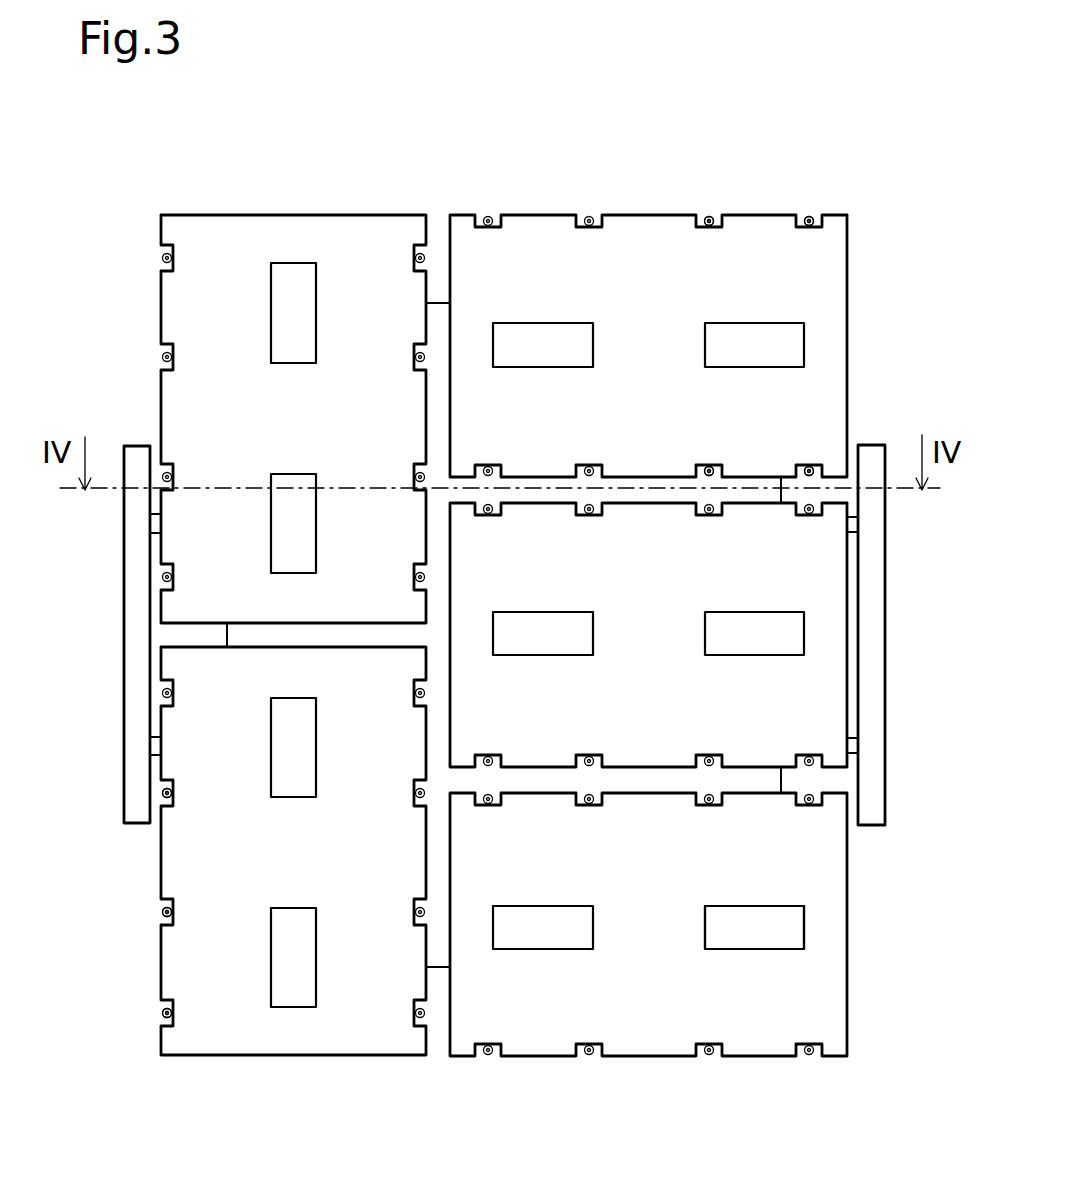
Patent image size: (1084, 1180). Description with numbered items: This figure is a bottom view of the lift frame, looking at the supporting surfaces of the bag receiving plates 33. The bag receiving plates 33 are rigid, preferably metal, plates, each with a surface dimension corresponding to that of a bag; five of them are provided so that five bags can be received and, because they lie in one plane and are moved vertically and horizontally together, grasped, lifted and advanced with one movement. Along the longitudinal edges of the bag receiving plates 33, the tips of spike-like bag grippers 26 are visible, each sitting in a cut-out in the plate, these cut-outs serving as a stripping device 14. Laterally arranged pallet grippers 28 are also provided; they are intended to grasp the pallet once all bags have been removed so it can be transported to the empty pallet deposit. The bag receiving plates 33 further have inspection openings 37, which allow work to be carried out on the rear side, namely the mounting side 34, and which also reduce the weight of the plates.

The stripping device 14 is at (809, 221).
The bag grippers 26 is at (709, 473).
The pallet grippers 28 is at (138, 633).
The bag receiving plates 33 is at (530, 230).
The mounting side 34 is at (758, 940).
The inspection openings 37 is at (540, 635).